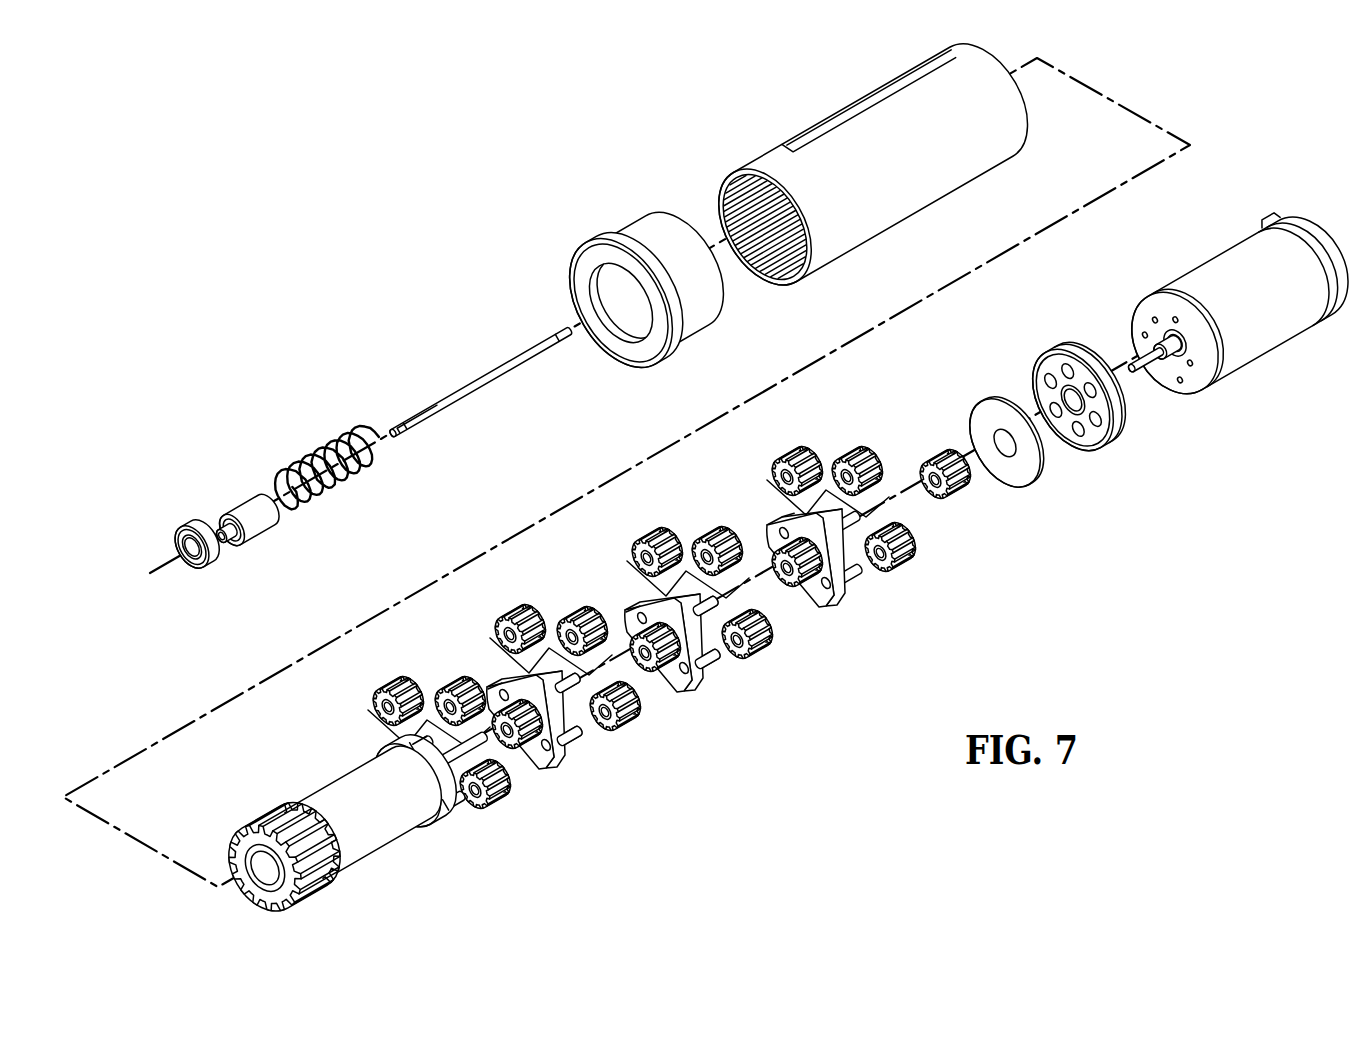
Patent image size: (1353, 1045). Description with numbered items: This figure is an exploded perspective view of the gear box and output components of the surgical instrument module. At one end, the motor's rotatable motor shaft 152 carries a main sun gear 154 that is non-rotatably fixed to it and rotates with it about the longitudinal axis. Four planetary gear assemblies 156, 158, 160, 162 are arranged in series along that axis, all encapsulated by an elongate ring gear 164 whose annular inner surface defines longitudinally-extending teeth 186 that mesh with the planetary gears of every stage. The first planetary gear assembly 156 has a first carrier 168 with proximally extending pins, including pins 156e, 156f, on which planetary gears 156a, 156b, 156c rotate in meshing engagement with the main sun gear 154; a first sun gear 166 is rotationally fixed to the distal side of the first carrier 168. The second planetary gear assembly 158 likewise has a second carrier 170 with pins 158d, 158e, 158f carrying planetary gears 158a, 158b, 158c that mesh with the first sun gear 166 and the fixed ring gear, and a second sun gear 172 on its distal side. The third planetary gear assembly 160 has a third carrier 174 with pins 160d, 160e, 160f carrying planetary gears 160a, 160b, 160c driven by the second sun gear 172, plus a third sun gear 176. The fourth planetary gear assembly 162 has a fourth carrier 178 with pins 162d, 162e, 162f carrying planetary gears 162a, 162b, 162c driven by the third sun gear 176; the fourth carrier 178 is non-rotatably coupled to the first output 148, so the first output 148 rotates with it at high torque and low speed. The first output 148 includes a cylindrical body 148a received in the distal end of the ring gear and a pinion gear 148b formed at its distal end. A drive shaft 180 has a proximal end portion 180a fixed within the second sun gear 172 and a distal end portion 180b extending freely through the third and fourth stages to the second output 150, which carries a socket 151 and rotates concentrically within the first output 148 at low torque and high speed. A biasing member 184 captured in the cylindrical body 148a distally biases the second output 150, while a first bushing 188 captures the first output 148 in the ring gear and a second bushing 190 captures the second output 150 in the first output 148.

The first output 148 is at (350, 812).
The cylindrical body 148a is at (342, 878).
The gear 148b is at (296, 904).
The second output 150 is at (249, 512).
The socket 151 is at (229, 540).
The motor shaft 152 is at (1212, 372).
The main sun gear 154 is at (1008, 492).
The first planetary gear assembly 156 is at (853, 525).
The planetary gear 156a is at (897, 557).
The planetary gear 156b is at (862, 464).
The planetary gear 156c is at (800, 462).
The pin 156e is at (936, 464).
The pin 156f is at (786, 546).
The second planetary gear assembly 158 is at (715, 615).
The planetary gear 158a is at (755, 646).
The planetary gear 158b is at (707, 540).
The planetary gear 158c is at (650, 540).
The pin 158d is at (712, 660).
The pin 158e is at (706, 600).
The pin 158f is at (640, 635).
The third planetary gear assembly 160 is at (575, 700).
The planetary gear 160a is at (622, 718).
The planetary gear 160b is at (575, 620).
The planetary gear 160c is at (512, 618).
The pin 160d is at (578, 740).
The pin 160e is at (564, 680).
The pin 160f is at (504, 712).
The fourth planetary gear assembly 162 is at (457, 767).
The planetary gear 162a is at (492, 798).
The planetary gear 162b is at (448, 690).
The planetary gear 162c is at (388, 690).
The pin 162d is at (443, 820).
The pin 162e is at (366, 766).
The pin 162f is at (394, 760).
The elongate ring gear 164 is at (867, 164).
The first sun gear 166 is at (832, 606).
The first carrier 168 is at (782, 520).
The second carrier 170 is at (628, 610).
The second sun gear 172 is at (688, 688).
The third carrier 174 is at (553, 762).
The third sun gear 176 is at (498, 684).
The fourth carrier 178 is at (402, 790).
The drive shaft 180 is at (498, 384).
The proximal end portion 180a is at (567, 338).
The distal end portion 180b is at (406, 433).
The biasing member 184 is at (326, 455).
The teeth 186 is at (733, 200).
The first bushing 188 is at (641, 236).
The second bushing 190 is at (192, 524).